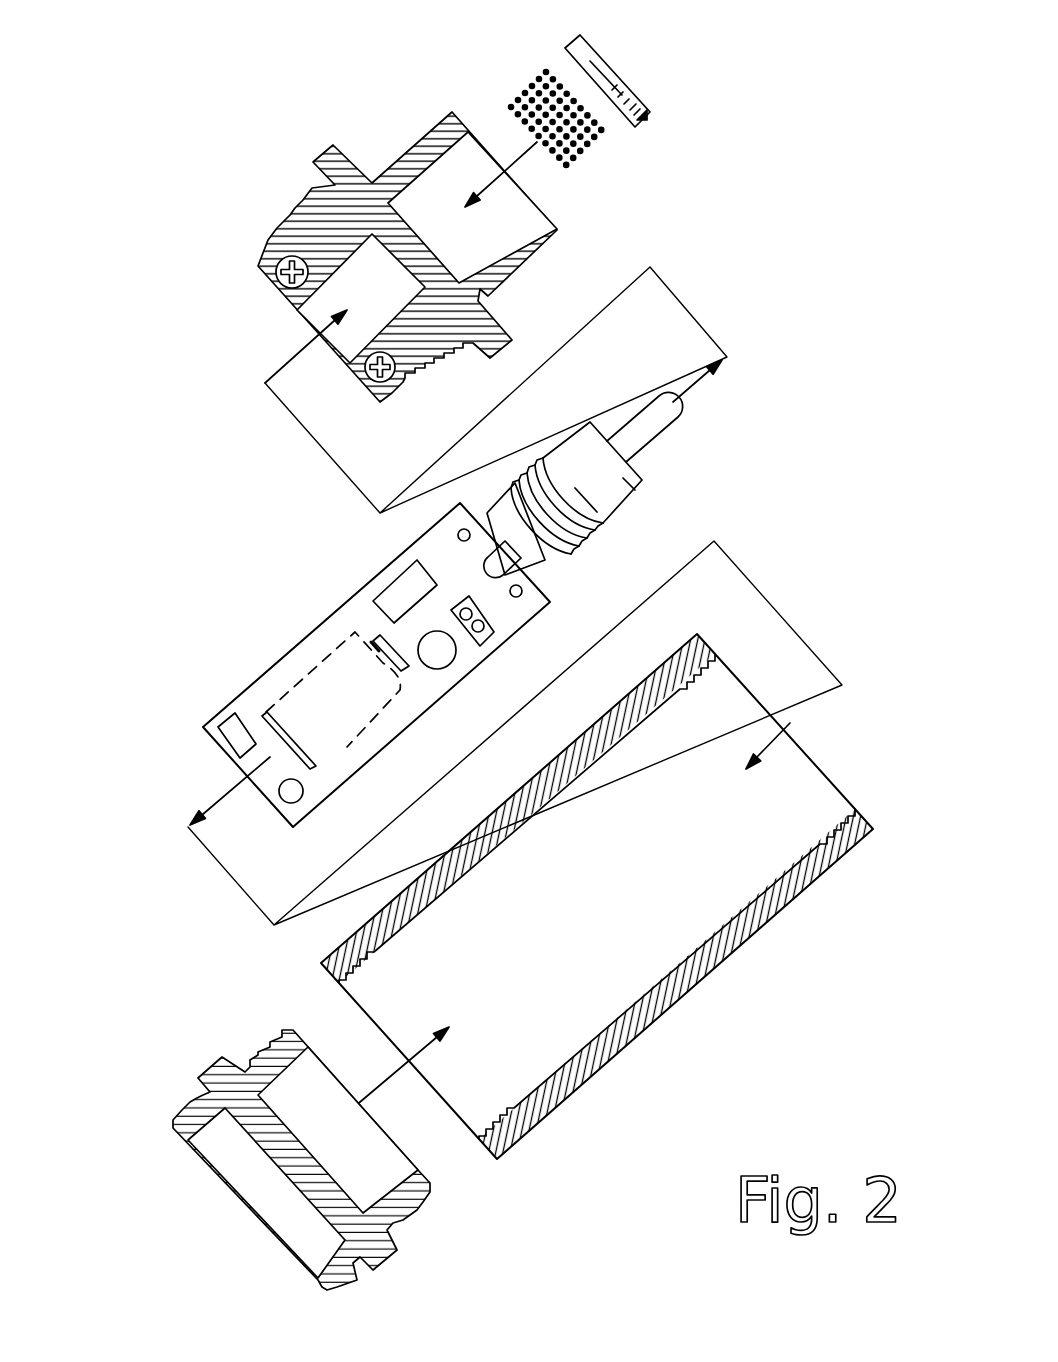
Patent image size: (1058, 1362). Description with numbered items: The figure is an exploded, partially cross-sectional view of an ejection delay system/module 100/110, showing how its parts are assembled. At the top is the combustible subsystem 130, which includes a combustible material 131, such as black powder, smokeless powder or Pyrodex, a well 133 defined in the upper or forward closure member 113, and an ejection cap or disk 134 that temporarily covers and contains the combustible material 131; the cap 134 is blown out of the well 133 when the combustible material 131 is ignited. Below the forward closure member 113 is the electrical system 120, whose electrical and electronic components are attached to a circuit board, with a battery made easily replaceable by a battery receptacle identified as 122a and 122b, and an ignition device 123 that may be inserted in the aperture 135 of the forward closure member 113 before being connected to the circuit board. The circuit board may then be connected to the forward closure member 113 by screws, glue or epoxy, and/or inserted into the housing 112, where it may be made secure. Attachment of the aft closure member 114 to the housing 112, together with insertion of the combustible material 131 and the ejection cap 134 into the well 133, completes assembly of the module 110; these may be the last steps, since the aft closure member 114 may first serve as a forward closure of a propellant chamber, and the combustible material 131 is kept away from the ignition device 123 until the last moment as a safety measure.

The ejection delay system 100 is at (210, 112).
The ejection delay module 110 is at (523, 701).
The housing 112 is at (712, 965).
The upper/forward closure member 113 is at (408, 257).
The aft closure member 114 is at (380, 1257).
The electrical system 120 is at (446, 609).
The battery receptacle 122a is at (262, 716).
The battery receptacle 122b is at (382, 637).
The ignition device 123 is at (625, 479).
The combustible subsystem 130 is at (673, 118).
The combustible material 131 is at (585, 158).
The well 133 is at (513, 216).
The ejection cap 134 is at (598, 55).
The aperture 135 is at (308, 305).